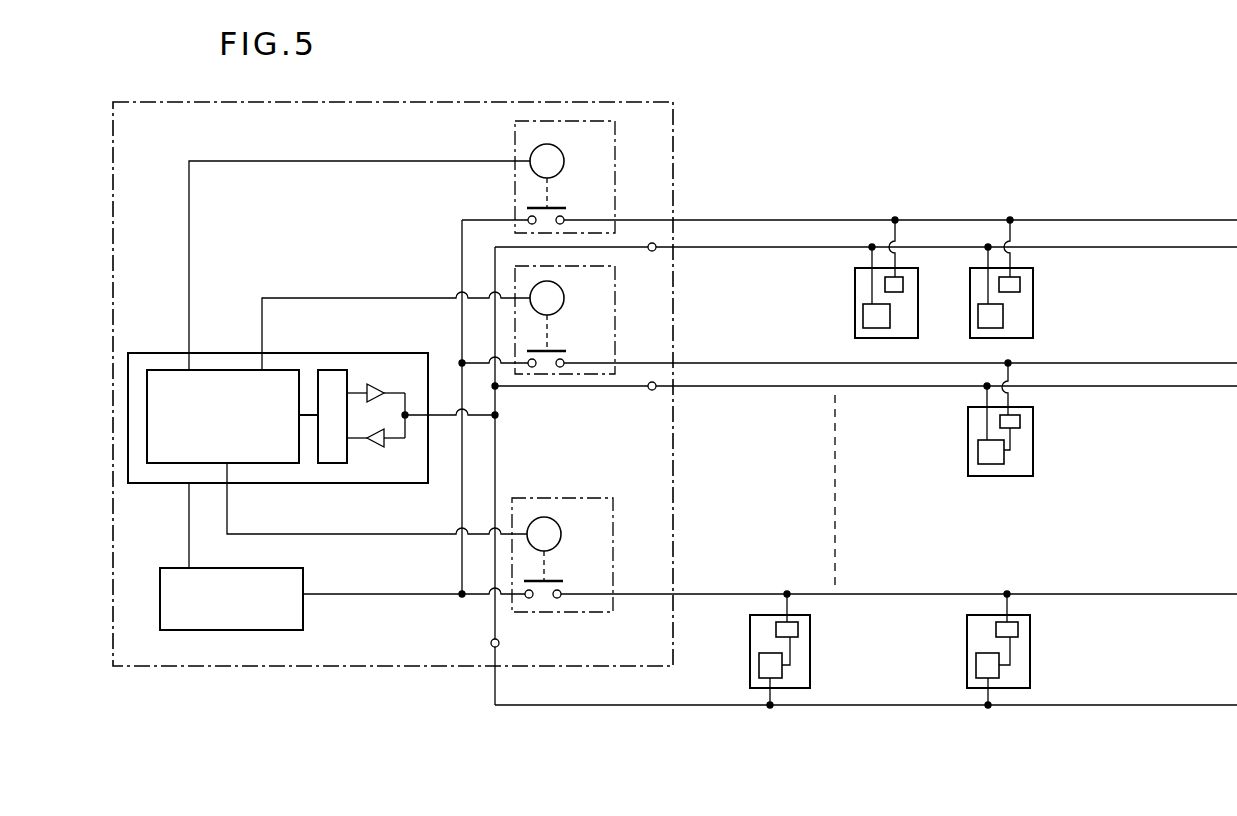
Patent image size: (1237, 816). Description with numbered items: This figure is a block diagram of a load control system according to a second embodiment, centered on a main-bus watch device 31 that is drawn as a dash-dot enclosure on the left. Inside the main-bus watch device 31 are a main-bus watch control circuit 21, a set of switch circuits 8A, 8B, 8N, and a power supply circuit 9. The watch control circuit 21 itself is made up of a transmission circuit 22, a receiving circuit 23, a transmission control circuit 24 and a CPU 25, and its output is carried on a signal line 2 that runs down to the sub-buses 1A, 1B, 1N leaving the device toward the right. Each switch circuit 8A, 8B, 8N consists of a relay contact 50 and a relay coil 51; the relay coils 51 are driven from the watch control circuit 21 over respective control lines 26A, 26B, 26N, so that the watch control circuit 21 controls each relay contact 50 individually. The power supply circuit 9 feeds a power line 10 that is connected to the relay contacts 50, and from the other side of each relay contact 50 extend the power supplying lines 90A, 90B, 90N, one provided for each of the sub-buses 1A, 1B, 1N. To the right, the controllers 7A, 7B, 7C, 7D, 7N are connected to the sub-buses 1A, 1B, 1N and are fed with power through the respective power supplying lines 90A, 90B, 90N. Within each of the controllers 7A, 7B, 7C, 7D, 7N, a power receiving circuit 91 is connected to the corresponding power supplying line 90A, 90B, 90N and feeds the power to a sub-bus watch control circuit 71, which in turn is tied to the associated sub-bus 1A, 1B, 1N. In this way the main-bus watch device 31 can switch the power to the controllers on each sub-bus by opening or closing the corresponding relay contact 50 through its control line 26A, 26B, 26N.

The sub-bus 1A is at (1200, 249).
The sub-bus 1B is at (1205, 388).
The sub-bus 1N is at (1200, 707).
The signal line bus 2 is at (495, 472).
The controller 7A is at (918, 290).
The controller 7B is at (1033, 290).
The controller 7C is at (1033, 428).
The controller 7D is at (810, 636).
The controller 7N is at (1030, 636).
The switch circuit 8A is at (615, 176).
The switch circuit 8B is at (615, 333).
The switch circuit 8N is at (613, 562).
The power supply circuit 9 is at (285, 568).
The power supply line 10 is at (432, 594).
The main-bus watch control circuit 21 is at (394, 353).
The transmission circuit 22 is at (373, 389).
The receiving circuit 23 is at (377, 447).
The transmission control circuit 24 is at (163, 370).
The CPU 25 is at (337, 370).
The control line 26A is at (332, 161).
The control line 26B is at (332, 298).
The control line 26N is at (352, 534).
The main-bus watch device 31 is at (673, 474).
The relay contact 50 is at (564, 208).
The relay coil 51 is at (562, 160).
The sub-bus watch control circuit 71 is at (863, 318).
The power supplying line 90A is at (1135, 220).
The power supplying line 90B is at (1138, 363).
The power supplying line 90N is at (1138, 594).
The power receiving circuit 91 is at (899, 292).